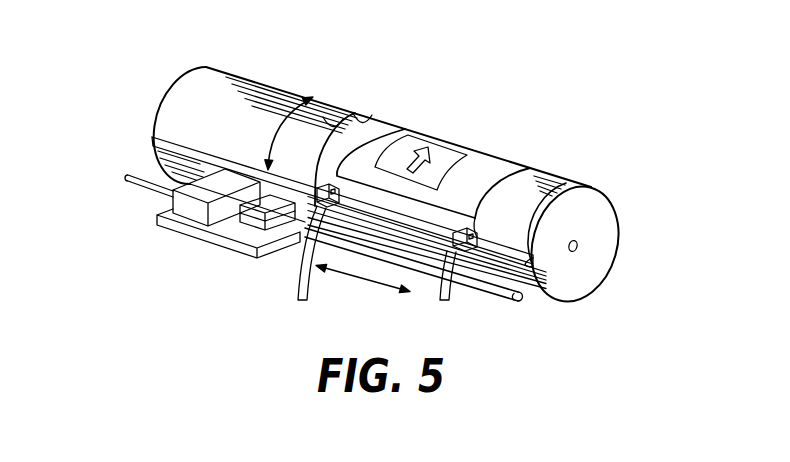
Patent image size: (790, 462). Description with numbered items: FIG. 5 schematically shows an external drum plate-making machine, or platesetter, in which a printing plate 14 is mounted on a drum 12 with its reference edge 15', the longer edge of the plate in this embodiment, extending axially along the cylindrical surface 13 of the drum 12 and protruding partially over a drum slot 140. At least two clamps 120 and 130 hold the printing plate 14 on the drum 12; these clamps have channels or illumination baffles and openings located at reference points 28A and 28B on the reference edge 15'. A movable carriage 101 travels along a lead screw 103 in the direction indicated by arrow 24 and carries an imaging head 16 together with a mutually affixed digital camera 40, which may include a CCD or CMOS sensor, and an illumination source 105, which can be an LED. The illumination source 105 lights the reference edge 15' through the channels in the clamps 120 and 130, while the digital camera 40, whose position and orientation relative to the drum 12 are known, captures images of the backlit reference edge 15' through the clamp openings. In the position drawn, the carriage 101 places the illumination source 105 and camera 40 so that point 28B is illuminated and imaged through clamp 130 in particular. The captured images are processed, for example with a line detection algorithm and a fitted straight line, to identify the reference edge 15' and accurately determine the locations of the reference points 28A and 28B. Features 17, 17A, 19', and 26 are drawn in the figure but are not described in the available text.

The drum 12 is at (619, 238).
The cylindrical surface 13 is at (562, 181).
The printing plate 14 is at (531, 180).
The reference edge 15' is at (405, 142).
The imaging head 16 is at (190, 203).
The cover 17 is at (443, 143).
The cover band 17A is at (352, 115).
The notch 19' is at (291, 90).
The arrow 24 is at (370, 284).
The rotation arrow 26 is at (290, 110).
The reference point 28A is at (455, 296).
The reference point 28B is at (308, 258).
The digital camera 40 is at (252, 217).
The carriage 101 is at (157, 219).
The lead screw 103 is at (521, 304).
The illumination source 105 is at (249, 226).
The clamp 120 is at (452, 300).
The clamp 130 is at (310, 283).
The drum slot 140 is at (534, 277).